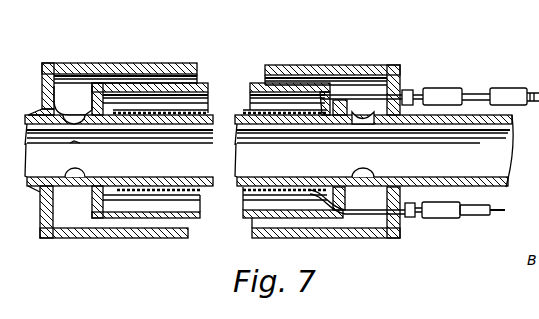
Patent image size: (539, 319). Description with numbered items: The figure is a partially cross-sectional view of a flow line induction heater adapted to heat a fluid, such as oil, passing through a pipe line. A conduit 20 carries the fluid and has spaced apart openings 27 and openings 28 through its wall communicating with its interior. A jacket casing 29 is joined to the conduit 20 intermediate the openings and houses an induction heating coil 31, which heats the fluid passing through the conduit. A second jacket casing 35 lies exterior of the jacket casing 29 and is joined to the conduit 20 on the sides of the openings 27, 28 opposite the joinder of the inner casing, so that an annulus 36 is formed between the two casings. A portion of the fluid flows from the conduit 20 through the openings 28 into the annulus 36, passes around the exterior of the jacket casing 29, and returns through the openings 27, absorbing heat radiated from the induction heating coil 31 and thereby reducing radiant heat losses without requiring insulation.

The conduit 20 is at (285, 180).
The openings 27 is at (371, 156).
The openings 28 is at (79, 156).
The jacket casing 29 is at (199, 88).
The induction heating coil 31 is at (195, 113).
The second jacket casing 35 is at (53, 63).
The annulus 36 is at (75, 90).